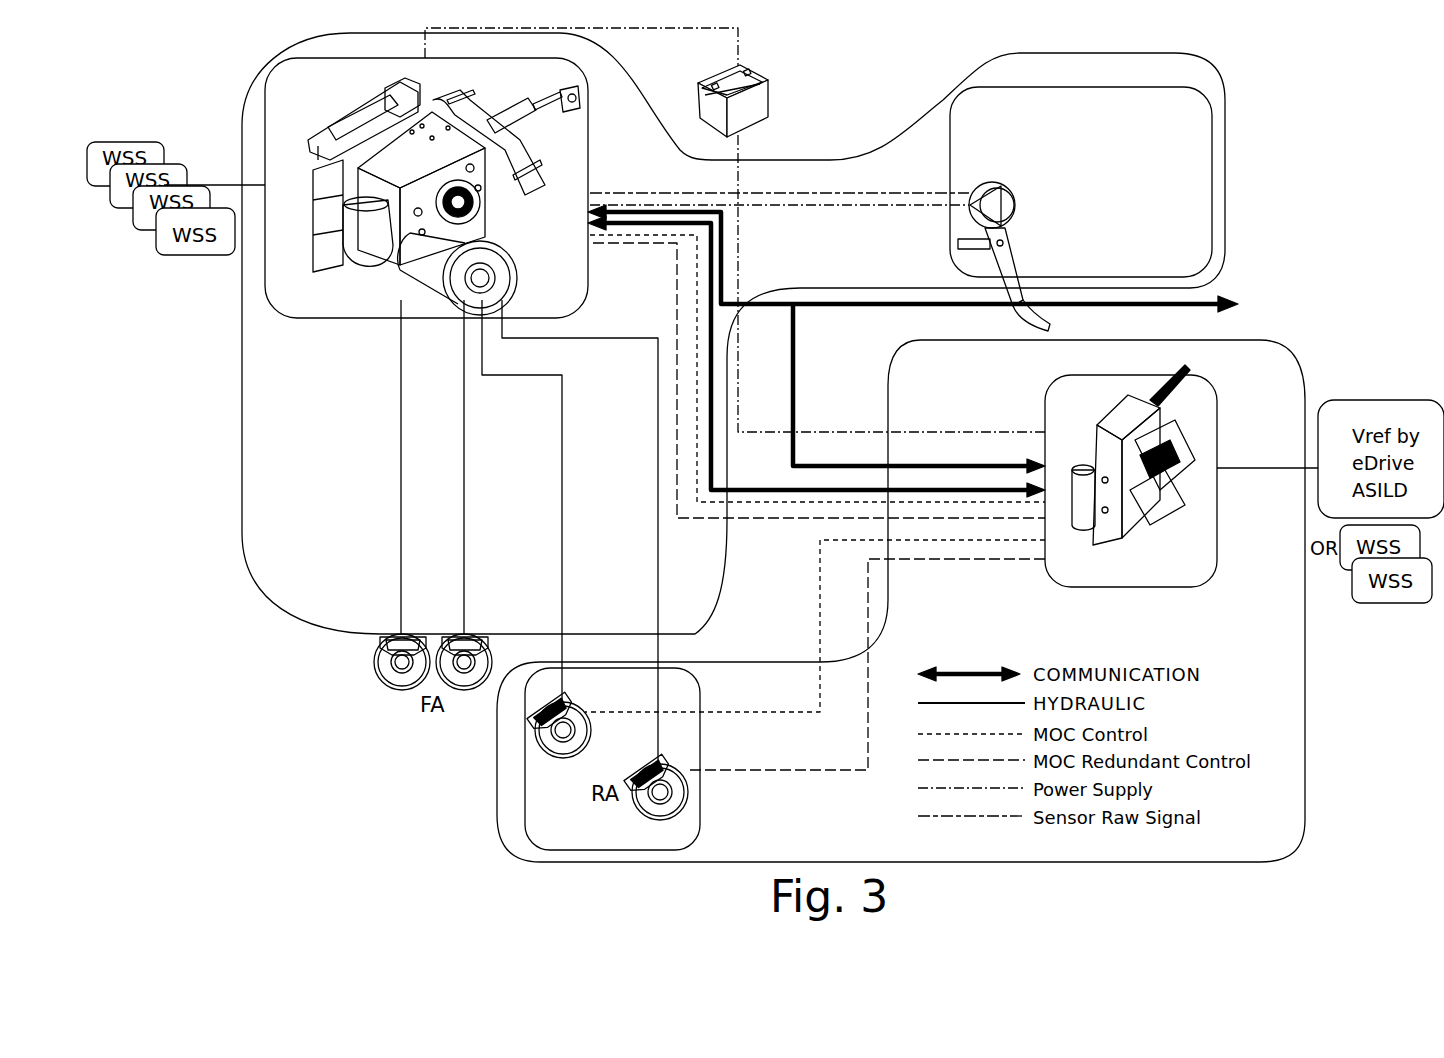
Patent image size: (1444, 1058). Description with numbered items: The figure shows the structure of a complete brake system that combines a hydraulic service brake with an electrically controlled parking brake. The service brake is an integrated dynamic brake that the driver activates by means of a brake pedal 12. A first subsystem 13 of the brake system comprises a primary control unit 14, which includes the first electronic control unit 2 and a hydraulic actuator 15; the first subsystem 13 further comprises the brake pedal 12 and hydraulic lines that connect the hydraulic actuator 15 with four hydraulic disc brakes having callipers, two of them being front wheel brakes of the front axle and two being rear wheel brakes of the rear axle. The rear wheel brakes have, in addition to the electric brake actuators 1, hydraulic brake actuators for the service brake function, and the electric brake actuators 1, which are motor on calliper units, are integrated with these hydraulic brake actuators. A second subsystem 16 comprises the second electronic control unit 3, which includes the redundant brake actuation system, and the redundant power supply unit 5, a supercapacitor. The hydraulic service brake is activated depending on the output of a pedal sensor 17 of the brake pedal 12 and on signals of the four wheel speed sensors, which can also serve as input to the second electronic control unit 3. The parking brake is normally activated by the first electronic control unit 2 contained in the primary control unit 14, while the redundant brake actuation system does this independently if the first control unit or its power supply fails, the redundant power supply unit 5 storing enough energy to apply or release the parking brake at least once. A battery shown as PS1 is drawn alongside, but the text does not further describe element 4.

The electric brake actuator 1 is at (573, 697).
The first electronic control unit 2 is at (488, 206).
The second electronic control unit 3 is at (1190, 588).
The power supply (battery PS1) 4 is at (770, 96).
The redundant power supply unit 5 is at (1075, 468).
The brake pedal 12 is at (1212, 150).
The first subsystem 13 is at (335, 608).
The primary control unit 14 is at (305, 320).
The hydraulic actuator 15 is at (500, 242).
The second subsystem 16 is at (1258, 375).
The pedal sensor 17 is at (1015, 195).